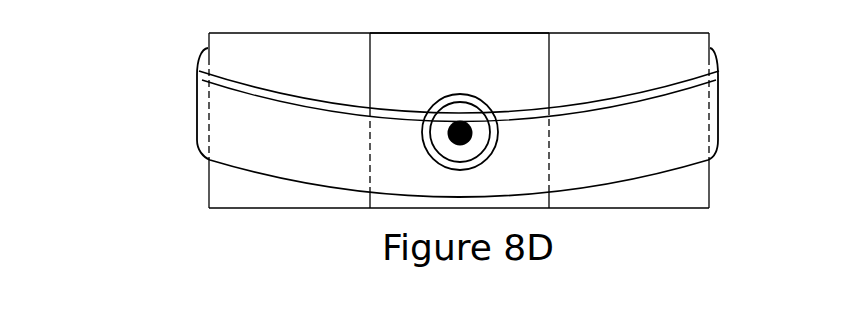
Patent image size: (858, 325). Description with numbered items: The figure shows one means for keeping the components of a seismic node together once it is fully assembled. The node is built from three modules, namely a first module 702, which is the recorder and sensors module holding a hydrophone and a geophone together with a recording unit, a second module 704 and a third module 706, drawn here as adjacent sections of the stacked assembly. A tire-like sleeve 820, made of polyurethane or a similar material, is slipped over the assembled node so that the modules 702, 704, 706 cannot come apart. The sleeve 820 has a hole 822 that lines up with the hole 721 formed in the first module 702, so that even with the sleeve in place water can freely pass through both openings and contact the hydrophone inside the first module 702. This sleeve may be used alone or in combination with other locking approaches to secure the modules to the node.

The second module 704 is at (305, 83).
The first module 702 is at (450, 70).
The third module 706 is at (641, 85).
The tire-like sleeve 820 is at (722, 103).
The hole 822 is at (433, 162).
The hole 721 is at (485, 149).